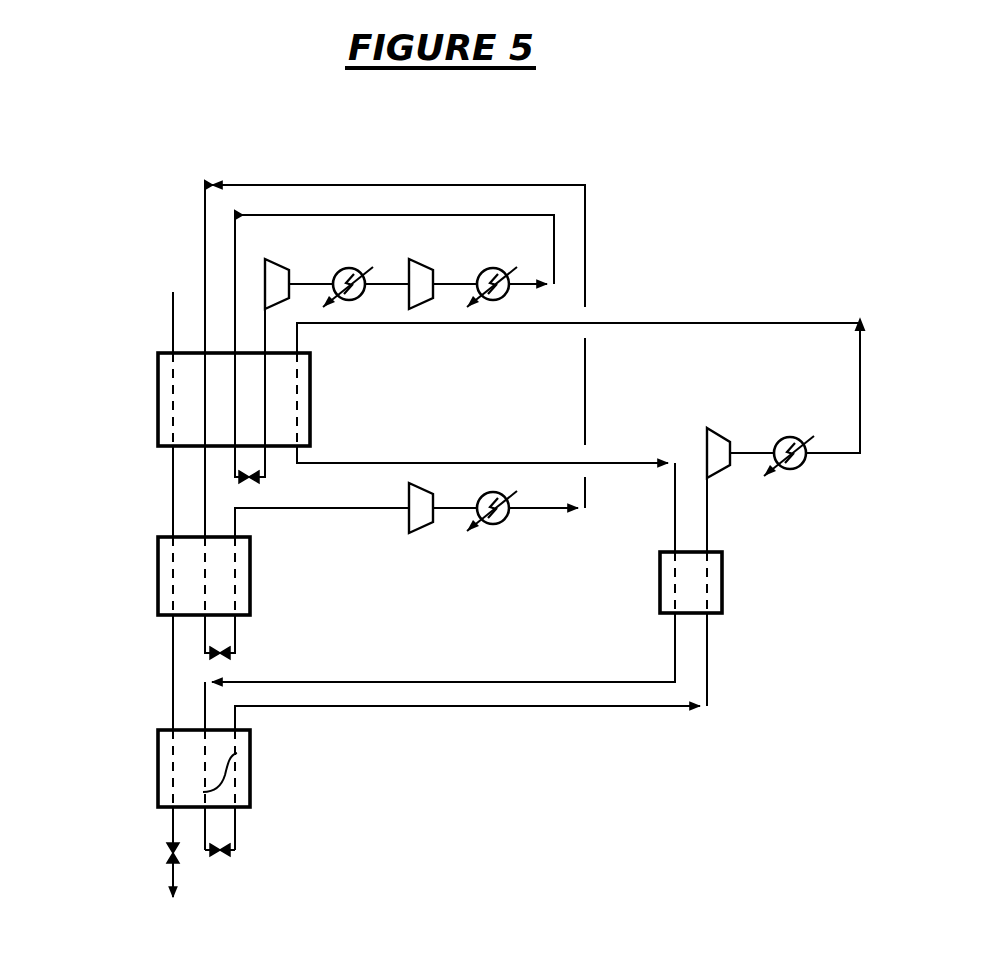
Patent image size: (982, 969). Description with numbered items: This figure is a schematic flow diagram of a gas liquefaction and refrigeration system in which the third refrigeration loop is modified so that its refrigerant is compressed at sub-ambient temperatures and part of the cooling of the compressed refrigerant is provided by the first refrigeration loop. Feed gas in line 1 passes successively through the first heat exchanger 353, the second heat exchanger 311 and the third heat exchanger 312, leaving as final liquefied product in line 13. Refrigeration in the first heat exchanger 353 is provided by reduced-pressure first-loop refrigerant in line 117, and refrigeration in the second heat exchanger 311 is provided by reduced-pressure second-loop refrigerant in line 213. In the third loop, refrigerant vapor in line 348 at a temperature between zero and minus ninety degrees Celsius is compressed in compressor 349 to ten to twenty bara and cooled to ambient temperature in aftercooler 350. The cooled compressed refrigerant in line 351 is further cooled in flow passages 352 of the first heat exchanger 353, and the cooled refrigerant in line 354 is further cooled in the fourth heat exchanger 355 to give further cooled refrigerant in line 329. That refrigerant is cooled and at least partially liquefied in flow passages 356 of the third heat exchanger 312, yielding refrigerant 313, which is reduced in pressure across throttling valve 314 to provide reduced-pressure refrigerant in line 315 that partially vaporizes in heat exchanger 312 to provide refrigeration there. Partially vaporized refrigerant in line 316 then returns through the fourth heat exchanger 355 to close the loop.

The feed gas line 1 is at (173, 313).
The first heat exchange zone or heat exchanger 353 is at (158, 378).
The flow passages 352 is at (294, 415).
The cooled refrigerant line 354 is at (388, 463).
The reduced pressure refrigerant line 117 is at (292, 472).
The cooled compressed refrigerant line 351 is at (758, 297).
The compressor 349 is at (706, 428).
The aftercooler 350 is at (785, 473).
The refrigerant vapor line 348 is at (733, 500).
The fourth heat exchange zone or heat exchanger 355 is at (722, 585).
The second heat exchange zone or heat exchanger 311 is at (158, 555).
The reduced pressure refrigerant line 213 is at (261, 632).
The further cooled refrigerant line 329 is at (423, 682).
The partially-vaporized refrigerant line 316 is at (386, 707).
The third heat exchange zone or heat exchanger 312 is at (158, 752).
The flow passages 356 is at (237, 753).
The final liquefied product line 13 is at (172, 826).
The reduced-pressure refrigerant line 315 is at (262, 818).
The refrigerant line 313 is at (204, 852).
The throttling valve 314 is at (232, 853).